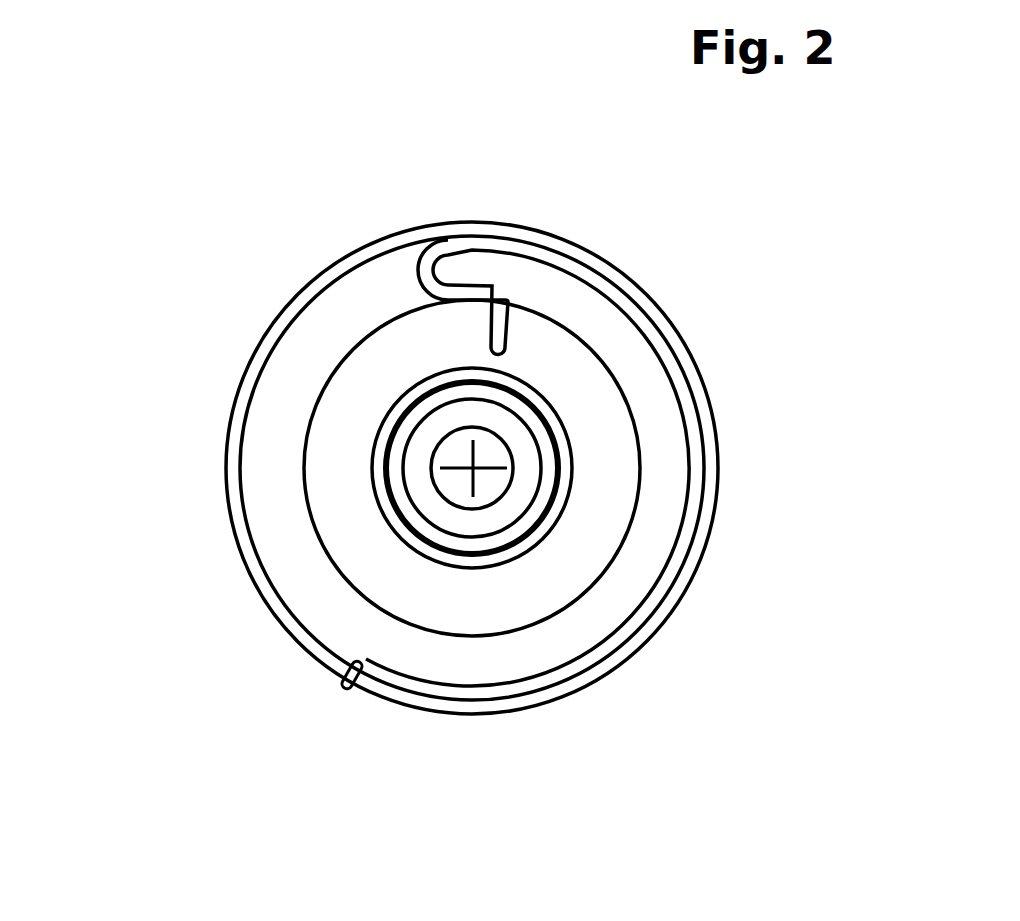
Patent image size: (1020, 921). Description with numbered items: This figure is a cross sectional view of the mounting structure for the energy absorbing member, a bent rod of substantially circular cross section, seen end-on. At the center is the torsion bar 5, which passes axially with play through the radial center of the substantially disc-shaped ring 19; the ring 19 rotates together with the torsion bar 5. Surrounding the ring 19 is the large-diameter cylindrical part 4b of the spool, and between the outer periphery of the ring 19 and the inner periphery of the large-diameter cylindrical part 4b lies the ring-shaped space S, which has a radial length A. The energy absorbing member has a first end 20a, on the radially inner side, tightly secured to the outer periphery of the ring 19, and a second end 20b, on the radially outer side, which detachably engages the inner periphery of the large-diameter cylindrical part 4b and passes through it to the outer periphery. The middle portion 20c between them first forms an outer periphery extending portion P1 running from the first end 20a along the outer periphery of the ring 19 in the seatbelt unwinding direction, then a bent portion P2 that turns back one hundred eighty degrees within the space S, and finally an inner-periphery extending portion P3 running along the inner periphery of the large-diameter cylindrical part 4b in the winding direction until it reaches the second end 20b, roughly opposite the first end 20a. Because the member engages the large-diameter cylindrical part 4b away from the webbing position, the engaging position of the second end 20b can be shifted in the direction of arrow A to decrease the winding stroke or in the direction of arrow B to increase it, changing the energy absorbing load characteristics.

The ring 19 is at (365, 372).
The large-diameter cylindrical part 4b is at (240, 400).
The torsion bar 5 is at (488, 450).
The first end 20a is at (580, 316).
The second end 20b is at (343, 684).
The middle portion 20c is at (692, 528).
The outer periphery extending portion P1 is at (492, 278).
The bent portion P2 is at (408, 255).
The inner-periphery extending portion P3 is at (680, 472).
The ring-shaped space S is at (262, 489).
The radial length / direction of arrow A is at (323, 558).
The direction of arrow B is at (283, 690).